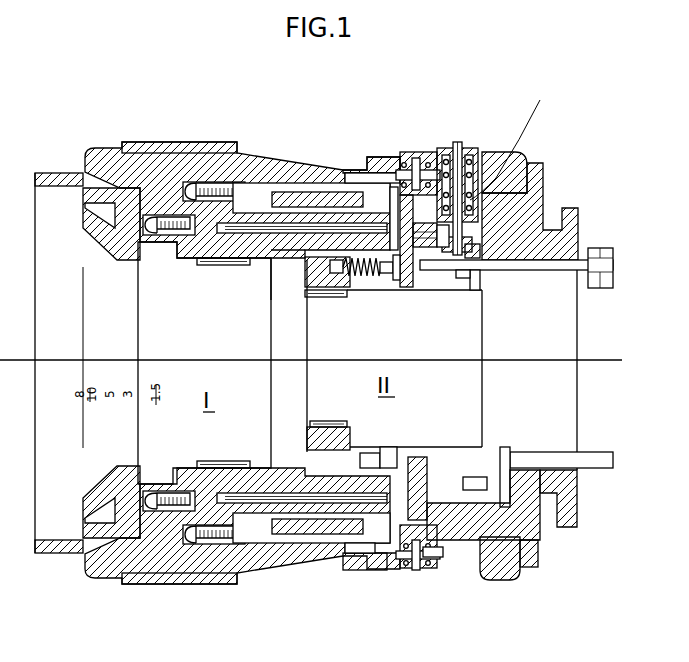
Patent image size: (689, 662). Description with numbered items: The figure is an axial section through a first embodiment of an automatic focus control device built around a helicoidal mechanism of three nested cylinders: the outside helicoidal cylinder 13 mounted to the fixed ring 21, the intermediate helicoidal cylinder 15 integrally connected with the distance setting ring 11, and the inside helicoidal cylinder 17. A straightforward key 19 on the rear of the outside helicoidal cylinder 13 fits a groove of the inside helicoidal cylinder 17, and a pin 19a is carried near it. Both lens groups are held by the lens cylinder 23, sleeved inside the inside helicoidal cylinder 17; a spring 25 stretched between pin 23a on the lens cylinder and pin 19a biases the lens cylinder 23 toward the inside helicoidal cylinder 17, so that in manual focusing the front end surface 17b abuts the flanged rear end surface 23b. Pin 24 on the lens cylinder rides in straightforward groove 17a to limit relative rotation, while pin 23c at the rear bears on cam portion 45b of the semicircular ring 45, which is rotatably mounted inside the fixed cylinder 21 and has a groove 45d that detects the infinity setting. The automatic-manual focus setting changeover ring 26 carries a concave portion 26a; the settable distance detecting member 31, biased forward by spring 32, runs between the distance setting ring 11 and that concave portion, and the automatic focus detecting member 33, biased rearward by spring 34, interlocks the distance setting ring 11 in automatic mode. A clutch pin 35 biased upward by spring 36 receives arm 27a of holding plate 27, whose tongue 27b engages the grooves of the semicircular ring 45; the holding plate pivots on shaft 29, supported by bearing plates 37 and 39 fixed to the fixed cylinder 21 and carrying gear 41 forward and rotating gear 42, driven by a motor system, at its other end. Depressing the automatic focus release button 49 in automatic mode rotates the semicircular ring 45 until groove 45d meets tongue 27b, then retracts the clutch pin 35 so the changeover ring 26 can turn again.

The distance setting ring 11 is at (90, 153).
The outside helicoidal cylinder 13 is at (292, 193).
The intermediate helicoidal cylinder 15 is at (277, 183).
The inside helicoidal cylinder 17 is at (200, 182).
The straightforward groove 17a is at (245, 498).
The front end surface 17b is at (183, 215).
The straightforward key 19 is at (387, 183).
The pin 19a is at (380, 274).
The fixed ring 21 is at (393, 157).
The lens cylinder 23 is at (112, 152).
The pin 23a is at (320, 265).
The flanged rear end surface 23b is at (145, 150).
The pin 23c is at (387, 455).
The pin 24 is at (295, 534).
The spring 25 is at (307, 297).
The automatic-manual focus setting changeover ring 26 is at (482, 160).
The concave portion 26a is at (435, 558).
The holding plate 27 is at (473, 260).
The arm 27a is at (470, 250).
The tongue 27b is at (475, 290).
The shaft 29 is at (614, 262).
The settable distance detecting member 31 is at (370, 568).
The spring 32 is at (413, 565).
The automatic focus detecting member 33 is at (352, 160).
The spring 34 is at (402, 158).
The clutch pin 35 is at (500, 152).
The spring 36 is at (515, 135).
The bearing plate 37 is at (404, 245).
The bearing plate 39 is at (545, 212).
The gear 41 is at (420, 248).
The rotating gear 42 is at (598, 284).
The semicircular ring 45 is at (430, 240).
The cam portion 45b is at (372, 462).
The groove 45d is at (396, 240).
The automatic focus release button 49 is at (455, 146).